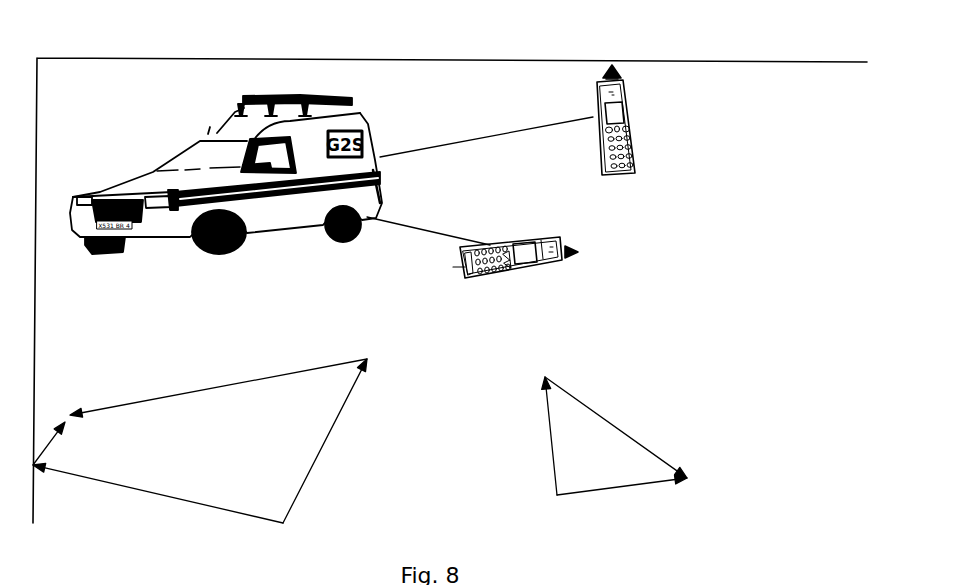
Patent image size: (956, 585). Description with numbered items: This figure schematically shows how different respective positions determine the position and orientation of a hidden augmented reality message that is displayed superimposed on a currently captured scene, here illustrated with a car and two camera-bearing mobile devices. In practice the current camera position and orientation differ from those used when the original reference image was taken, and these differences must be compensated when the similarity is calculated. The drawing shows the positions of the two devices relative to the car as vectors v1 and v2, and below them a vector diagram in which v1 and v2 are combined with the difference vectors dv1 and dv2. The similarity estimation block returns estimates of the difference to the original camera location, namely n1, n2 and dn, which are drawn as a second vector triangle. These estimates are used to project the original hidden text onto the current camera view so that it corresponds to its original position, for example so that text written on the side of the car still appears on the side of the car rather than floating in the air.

The velocity vector of vehicle relative to first mobile terminal v1 is at (331, 267).
The velocity vector of vehicle relative to second mobile terminal v2 is at (261, 370).
The estimate of difference to original camera location n1 is at (605, 280).
The estimate of difference to original camera location n2 is at (570, 373).
The velocity difference vector 1 dv1 is at (67, 443).
The velocity difference vector 2 dv2 is at (325, 441).
The estimate of difference to original camera location dn is at (616, 427).